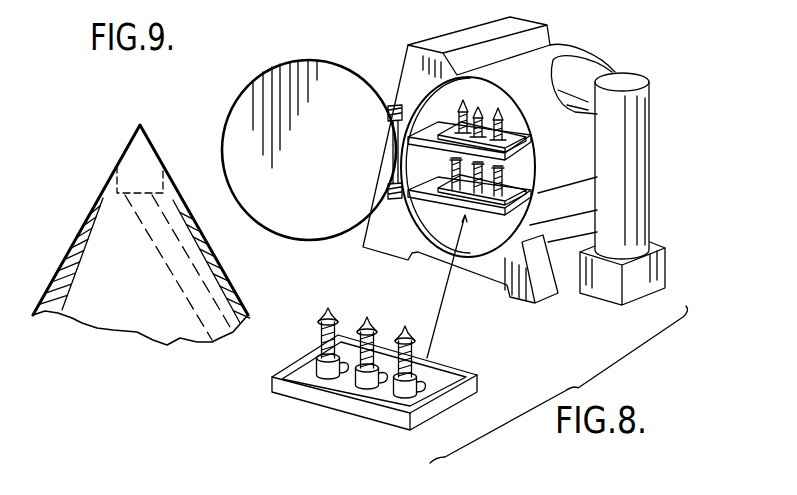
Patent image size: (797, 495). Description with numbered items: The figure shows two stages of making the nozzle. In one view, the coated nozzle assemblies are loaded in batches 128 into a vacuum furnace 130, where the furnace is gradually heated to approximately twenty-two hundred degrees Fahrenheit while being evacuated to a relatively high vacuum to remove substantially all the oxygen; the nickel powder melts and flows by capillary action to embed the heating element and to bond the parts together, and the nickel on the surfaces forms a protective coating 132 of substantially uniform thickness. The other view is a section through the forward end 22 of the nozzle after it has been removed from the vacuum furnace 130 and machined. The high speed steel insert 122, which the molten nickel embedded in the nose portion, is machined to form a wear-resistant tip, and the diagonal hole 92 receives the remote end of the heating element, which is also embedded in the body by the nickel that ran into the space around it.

In FIG. 9, the forward end 22 is at (107, 183).
In FIG. 8, the forward end 22 is at (329, 313).
In FIG. 9, the high speed steel insert 122 is at (143, 150).
In FIG. 9, the protective coating 132 is at (75, 243).
In FIG. 9, the diagonal hole 92 is at (198, 290).
In FIG. 8, the vacuum furnace 130 is at (583, 55).
In FIG. 8, the batch 128 is at (342, 403).